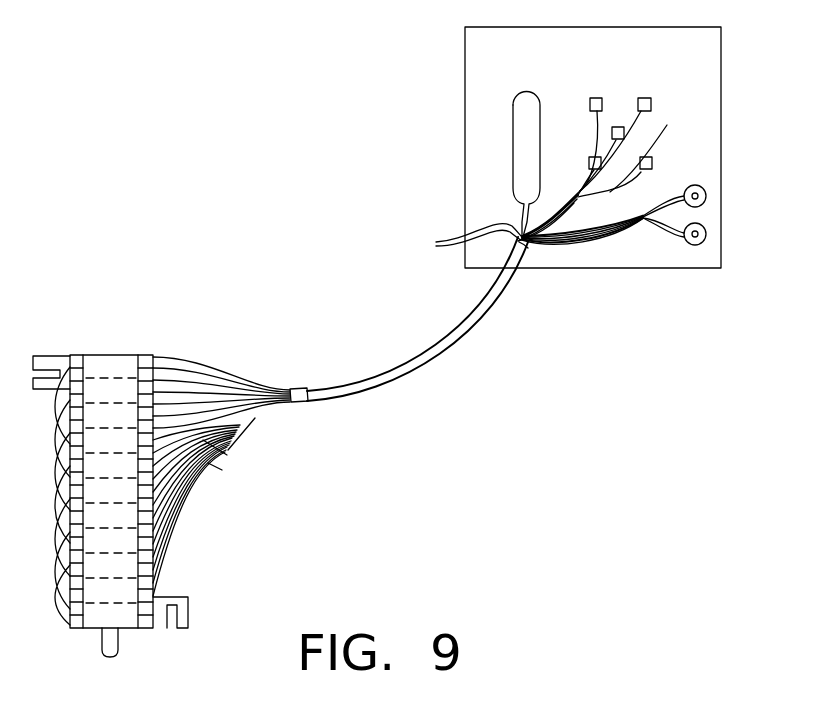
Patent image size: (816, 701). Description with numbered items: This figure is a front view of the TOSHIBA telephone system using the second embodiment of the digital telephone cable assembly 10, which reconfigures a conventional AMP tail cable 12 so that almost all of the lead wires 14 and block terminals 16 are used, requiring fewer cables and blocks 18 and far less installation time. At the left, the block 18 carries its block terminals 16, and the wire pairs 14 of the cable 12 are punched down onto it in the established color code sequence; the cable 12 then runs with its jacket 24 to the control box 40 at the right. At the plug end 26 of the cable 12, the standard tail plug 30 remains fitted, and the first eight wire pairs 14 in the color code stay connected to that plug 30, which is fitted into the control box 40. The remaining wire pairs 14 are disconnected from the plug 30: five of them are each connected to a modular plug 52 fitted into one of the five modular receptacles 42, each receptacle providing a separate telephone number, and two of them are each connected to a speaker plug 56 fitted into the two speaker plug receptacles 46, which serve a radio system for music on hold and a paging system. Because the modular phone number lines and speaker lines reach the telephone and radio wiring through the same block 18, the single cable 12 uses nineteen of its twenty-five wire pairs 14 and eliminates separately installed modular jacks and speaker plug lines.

The digital telephone cable assembly 10 is at (303, 183).
The tail cable 12 is at (445, 343).
The lead wires 14 is at (240, 425).
The block terminals 16 is at (80, 355).
The block 18 is at (110, 355).
The cable jacket 24 is at (497, 307).
The plug end 26 is at (527, 257).
The tail plug 30 is at (522, 92).
The TOSHIBA control box 40 is at (721, 112).
The modular receptacles 42 is at (597, 98).
The speaker plug receptacle 46 is at (700, 186).
The modular plug 52 is at (590, 102).
The speaker plug 56 is at (706, 196).